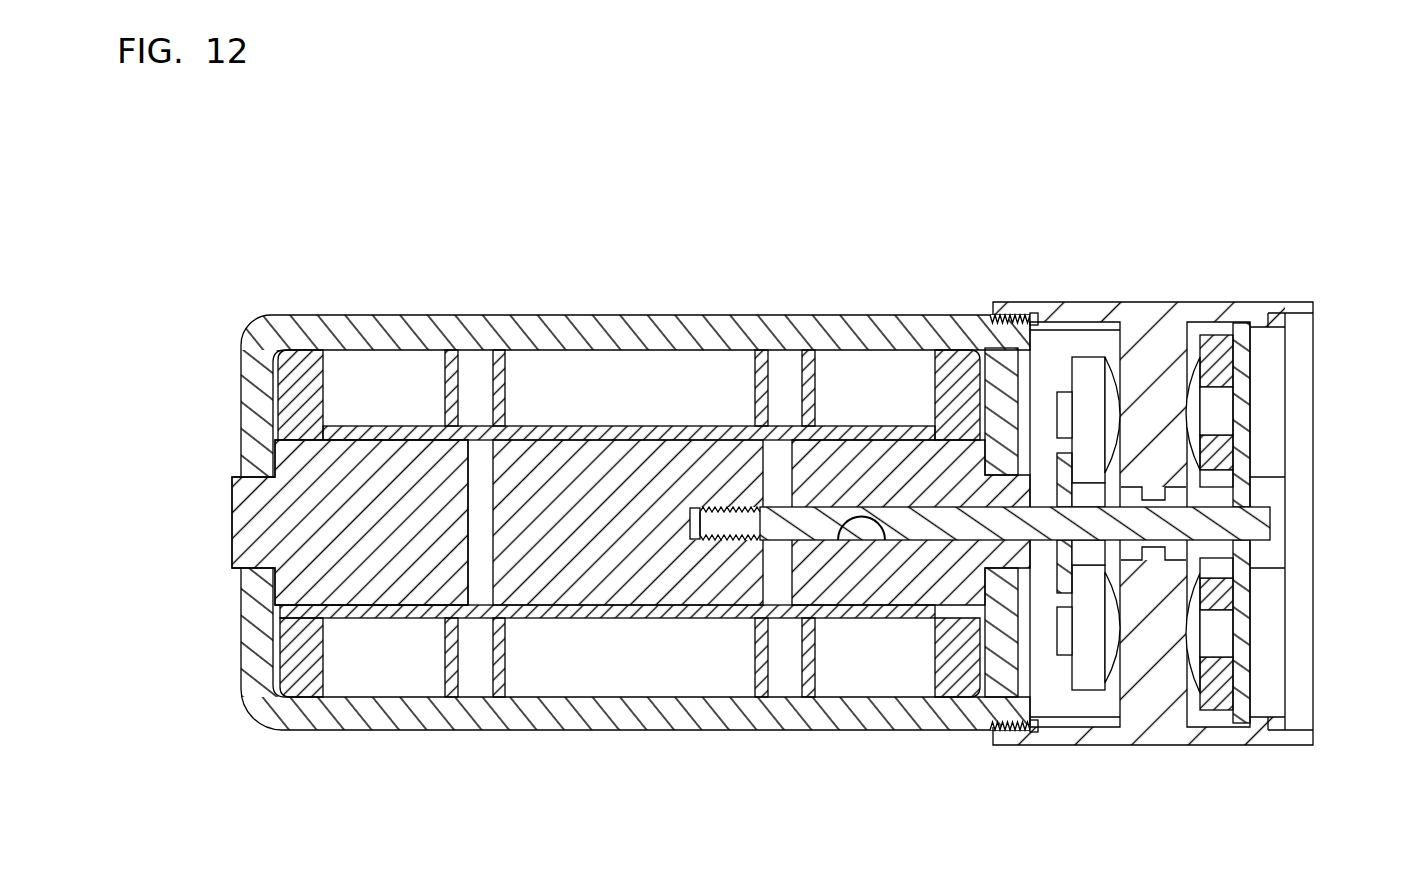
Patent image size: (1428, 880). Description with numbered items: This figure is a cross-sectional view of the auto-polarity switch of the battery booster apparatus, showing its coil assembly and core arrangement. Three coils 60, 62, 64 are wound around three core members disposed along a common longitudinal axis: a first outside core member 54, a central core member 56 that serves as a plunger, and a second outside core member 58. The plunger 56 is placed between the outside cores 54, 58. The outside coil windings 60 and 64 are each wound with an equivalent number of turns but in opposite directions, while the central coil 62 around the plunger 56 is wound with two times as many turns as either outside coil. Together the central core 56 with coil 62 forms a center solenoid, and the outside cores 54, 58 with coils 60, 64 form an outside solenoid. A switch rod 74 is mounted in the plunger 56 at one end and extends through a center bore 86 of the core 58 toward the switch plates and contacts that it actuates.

The outside core member 54 is at (357, 465).
The central core member 56 is at (598, 468).
The outside core member 58 is at (862, 467).
The outside coil 60 is at (407, 375).
The central coil 62 is at (682, 370).
The outside coil 64 is at (902, 375).
The switch rod 74 is at (1257, 519).
The center bore 86 is at (885, 540).